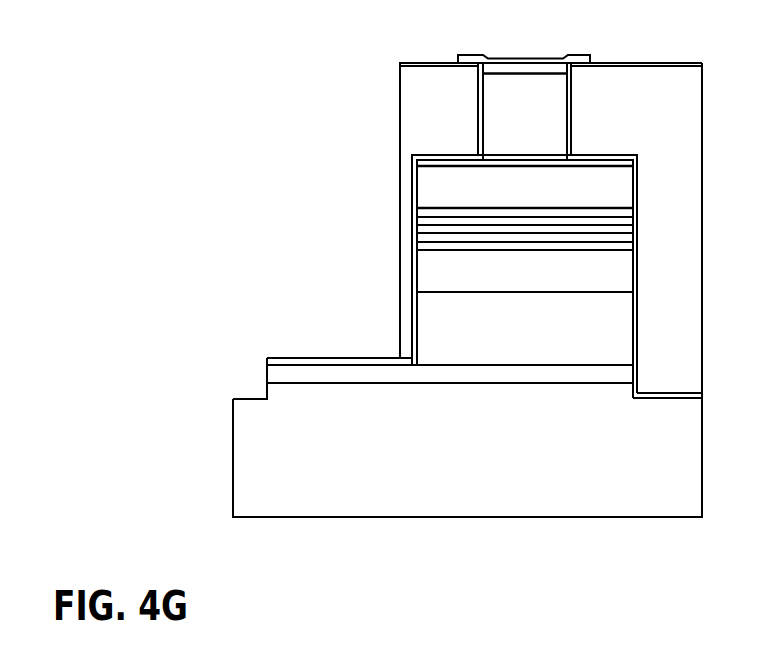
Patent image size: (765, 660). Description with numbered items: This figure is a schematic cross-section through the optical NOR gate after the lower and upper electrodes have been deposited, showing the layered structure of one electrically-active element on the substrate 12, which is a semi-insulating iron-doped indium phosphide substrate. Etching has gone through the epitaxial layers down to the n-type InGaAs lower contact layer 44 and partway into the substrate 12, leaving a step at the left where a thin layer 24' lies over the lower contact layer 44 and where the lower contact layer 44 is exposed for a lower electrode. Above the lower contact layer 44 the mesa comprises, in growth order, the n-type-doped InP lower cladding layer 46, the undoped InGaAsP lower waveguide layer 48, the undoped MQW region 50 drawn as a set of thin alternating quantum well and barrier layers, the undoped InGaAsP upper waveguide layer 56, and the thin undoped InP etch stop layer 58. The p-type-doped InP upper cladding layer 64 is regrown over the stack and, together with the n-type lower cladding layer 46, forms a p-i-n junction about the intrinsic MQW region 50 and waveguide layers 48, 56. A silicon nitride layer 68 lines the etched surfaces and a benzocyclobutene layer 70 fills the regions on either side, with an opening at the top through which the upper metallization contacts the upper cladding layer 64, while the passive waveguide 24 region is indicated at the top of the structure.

The substrate 12 is at (292, 481).
The passive waveguide 24 is at (524, 40).
The conductive layer 24' is at (339, 337).
The lower contact layer 44 is at (267, 374).
The lower cladding layer 46 is at (458, 336).
The lower waveguide layer 48 is at (458, 281).
The MQW region 50 is at (637, 208).
The upper waveguide layer 56 is at (458, 198).
The etch stop layer 58 is at (532, 158).
The upper cladding layer 64 is at (537, 114).
The silicon nitride layer 68 is at (478, 93).
The benzocyclobutene layer 70 is at (449, 136).